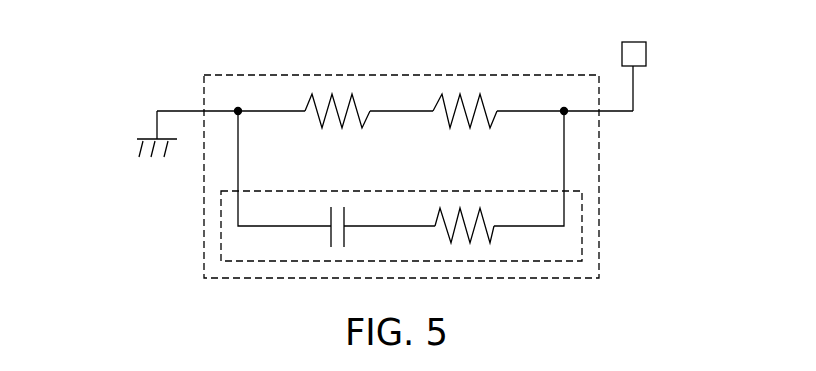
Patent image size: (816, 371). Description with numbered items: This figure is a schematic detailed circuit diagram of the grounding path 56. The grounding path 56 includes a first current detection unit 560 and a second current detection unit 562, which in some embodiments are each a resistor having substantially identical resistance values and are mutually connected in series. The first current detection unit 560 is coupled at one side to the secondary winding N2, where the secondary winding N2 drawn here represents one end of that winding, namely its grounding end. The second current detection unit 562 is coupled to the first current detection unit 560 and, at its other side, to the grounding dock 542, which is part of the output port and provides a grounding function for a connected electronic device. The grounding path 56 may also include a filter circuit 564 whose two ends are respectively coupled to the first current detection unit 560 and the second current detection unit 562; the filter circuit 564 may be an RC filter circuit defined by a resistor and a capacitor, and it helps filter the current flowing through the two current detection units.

The secondary winding N2 is at (153, 138).
The first current detection unit 560 is at (342, 99).
The second current detection unit 562 is at (467, 97).
The grounding dock 542 is at (646, 52).
The grounding path 56 is at (600, 148).
The filter circuit 564 is at (583, 218).